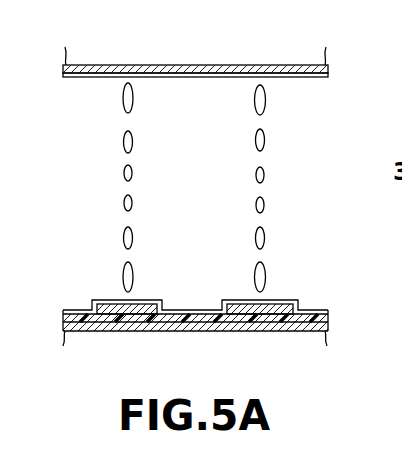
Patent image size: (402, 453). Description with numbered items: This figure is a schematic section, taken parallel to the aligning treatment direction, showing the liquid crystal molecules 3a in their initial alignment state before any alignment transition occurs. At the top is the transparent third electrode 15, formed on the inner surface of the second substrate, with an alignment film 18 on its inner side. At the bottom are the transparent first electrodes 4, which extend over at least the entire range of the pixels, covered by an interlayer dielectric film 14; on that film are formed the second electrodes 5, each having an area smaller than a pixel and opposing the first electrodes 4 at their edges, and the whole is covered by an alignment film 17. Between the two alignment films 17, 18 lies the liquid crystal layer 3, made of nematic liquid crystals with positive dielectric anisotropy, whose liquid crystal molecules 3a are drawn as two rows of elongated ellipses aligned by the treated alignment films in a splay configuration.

The third electrode 15 is at (180, 65).
The alignment film 18 is at (68, 78).
The liquid crystal molecules 3a is at (122, 203).
The liquid crystal layer 3 is at (273, 190).
The alignment film 17 is at (82, 310).
The second electrodes 5 is at (119, 324).
The first electrodes 4 is at (198, 331).
The interlayer dielectric film 14 is at (308, 324).